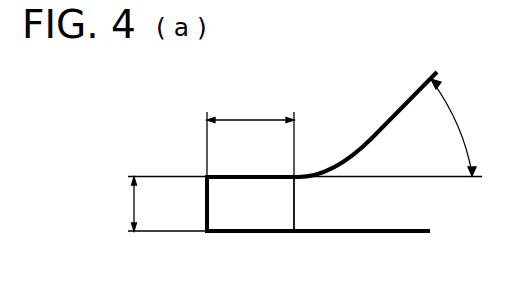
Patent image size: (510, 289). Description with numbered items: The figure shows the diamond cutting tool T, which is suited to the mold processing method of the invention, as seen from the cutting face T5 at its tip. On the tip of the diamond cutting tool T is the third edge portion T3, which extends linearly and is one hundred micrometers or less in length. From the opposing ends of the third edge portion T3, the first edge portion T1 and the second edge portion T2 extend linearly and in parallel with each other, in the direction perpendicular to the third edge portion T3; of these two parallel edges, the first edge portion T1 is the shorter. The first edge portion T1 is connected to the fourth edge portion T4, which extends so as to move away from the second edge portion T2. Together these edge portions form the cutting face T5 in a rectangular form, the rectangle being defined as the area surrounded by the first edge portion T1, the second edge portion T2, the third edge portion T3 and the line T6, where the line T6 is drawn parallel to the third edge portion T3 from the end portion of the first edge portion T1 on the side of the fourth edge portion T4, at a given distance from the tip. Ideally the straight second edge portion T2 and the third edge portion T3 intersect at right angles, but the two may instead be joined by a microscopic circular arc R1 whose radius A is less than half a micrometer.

The first edge portion T1 is at (244, 174).
The second edge portion T2 is at (243, 233).
The third edge portion T3 is at (205, 202).
The fourth edge portion T4 is at (408, 100).
The cutting face T5 is at (272, 207).
The line T6 is at (295, 205).
The diamond cutting tool T is at (370, 132).
The radius A is at (210, 228).
The microscopic circular arc R1 is at (205, 235).